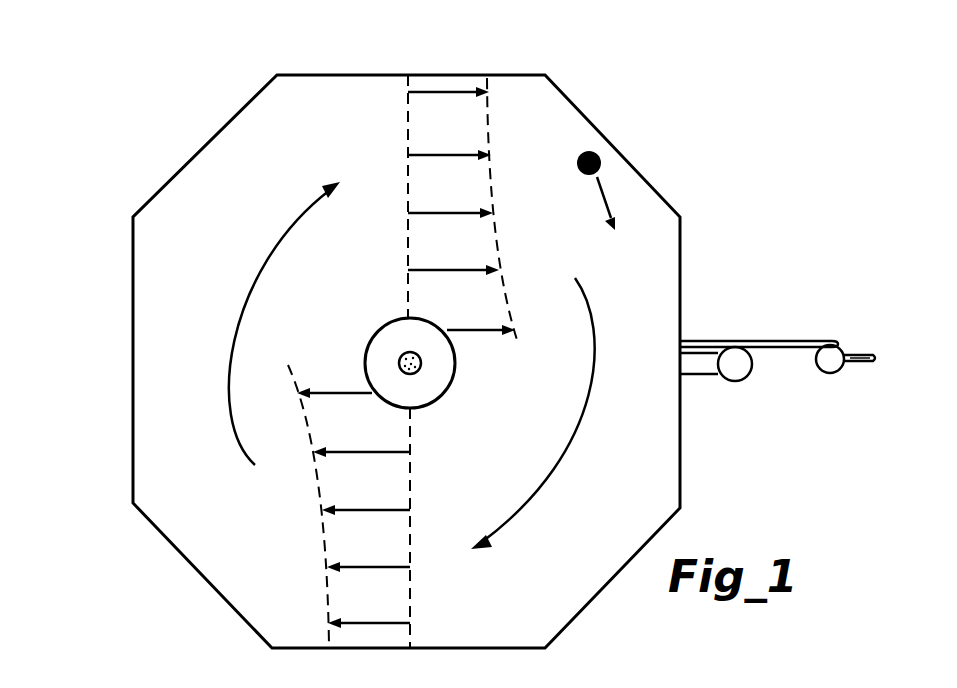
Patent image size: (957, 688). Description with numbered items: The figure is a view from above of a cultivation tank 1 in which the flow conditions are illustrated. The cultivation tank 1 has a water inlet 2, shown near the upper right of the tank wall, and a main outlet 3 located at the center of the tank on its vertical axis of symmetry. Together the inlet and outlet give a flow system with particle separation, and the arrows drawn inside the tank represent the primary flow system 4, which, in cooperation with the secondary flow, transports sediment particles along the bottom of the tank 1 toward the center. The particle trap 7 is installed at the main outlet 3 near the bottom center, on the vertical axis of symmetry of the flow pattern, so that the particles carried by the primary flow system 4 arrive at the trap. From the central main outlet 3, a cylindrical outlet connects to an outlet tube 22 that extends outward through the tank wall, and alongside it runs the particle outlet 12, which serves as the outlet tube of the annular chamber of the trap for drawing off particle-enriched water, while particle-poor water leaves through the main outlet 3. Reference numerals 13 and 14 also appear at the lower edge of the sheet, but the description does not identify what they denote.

The cultivation tank 1 is at (117, 254).
The water inlet 2 is at (603, 157).
The main outlet 3 is at (399, 354).
The primary flow system 4 is at (433, 85).
The particle trap 7 is at (343, 333).
The particle outlet 12 is at (762, 341).
The element 13 is at (786, 687).
The element 14 is at (842, 687).
The outlet tube 22 is at (702, 376).